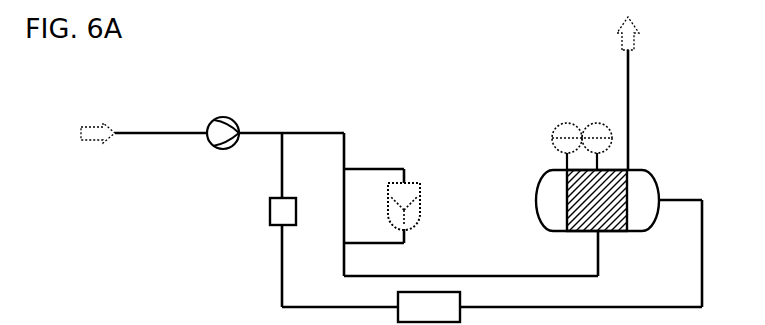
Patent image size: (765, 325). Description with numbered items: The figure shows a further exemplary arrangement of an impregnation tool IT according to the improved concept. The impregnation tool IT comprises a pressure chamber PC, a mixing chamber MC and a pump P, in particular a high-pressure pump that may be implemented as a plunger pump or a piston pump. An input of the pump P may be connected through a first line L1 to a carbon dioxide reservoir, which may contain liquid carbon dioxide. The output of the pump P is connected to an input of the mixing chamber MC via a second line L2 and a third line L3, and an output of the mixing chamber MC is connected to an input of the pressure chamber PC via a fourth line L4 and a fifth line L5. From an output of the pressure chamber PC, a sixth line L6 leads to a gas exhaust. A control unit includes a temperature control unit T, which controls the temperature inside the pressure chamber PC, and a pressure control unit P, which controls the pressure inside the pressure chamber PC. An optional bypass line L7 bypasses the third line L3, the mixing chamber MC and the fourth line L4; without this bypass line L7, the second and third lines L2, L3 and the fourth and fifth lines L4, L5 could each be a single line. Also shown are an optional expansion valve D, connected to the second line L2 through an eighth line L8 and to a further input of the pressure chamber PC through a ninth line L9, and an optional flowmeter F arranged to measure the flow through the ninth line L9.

The first line L1 is at (161, 122).
The pump P is at (409, 129).
The temperature control unit T is at (597, 135).
The second line L2 is at (291, 122).
The eighth line L8 is at (267, 165).
The expansion valve D is at (272, 211).
The ninth line L9 is at (477, 255).
The flowmeter F is at (429, 307).
The bypass line L7 is at (331, 204).
The third line L3 is at (374, 163).
The mixing chamber MC is at (424, 210).
The fourth line L4 is at (374, 230).
The impregnation tool IT is at (459, 112).
The pressure chamber PC is at (594, 200).
The sixth line L6 is at (643, 110).
The fifth line L5 is at (471, 254).